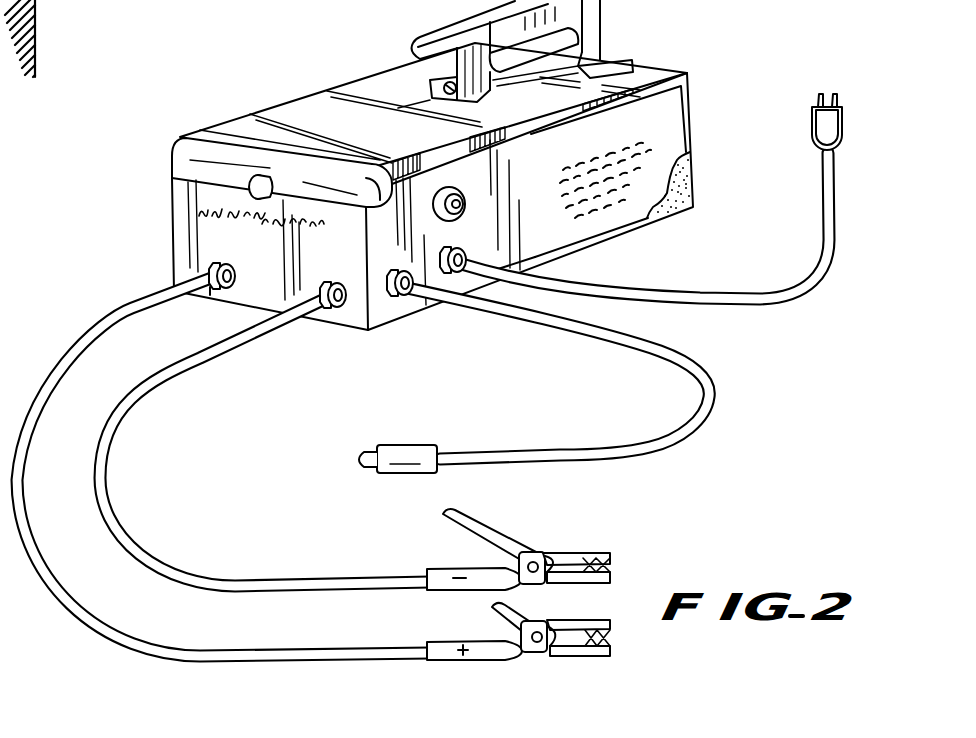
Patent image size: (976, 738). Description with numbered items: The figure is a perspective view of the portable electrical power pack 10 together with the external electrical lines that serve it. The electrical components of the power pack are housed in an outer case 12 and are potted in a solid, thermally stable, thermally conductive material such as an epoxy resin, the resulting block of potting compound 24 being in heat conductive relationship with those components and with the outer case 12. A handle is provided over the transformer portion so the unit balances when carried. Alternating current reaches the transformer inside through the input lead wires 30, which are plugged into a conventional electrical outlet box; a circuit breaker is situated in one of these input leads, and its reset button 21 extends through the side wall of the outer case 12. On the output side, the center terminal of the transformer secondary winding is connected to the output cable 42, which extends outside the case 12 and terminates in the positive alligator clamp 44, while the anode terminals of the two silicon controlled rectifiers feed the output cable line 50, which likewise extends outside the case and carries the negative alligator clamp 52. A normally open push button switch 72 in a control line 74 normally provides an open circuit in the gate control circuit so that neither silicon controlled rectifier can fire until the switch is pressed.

The portable electrical power pack 10 is at (207, 124).
The outer case 12 is at (640, 71).
The reset button 21 is at (464, 209).
The block of potting compound 24 is at (693, 183).
The input lead wires 30 is at (830, 96).
The output cable 42 is at (137, 303).
The positive alligator clamp 44 is at (500, 661).
The output cable line 50 is at (200, 357).
The negative alligator clamp 52 is at (531, 550).
The push button switch 72 is at (407, 443).
The control line 74 is at (707, 373).